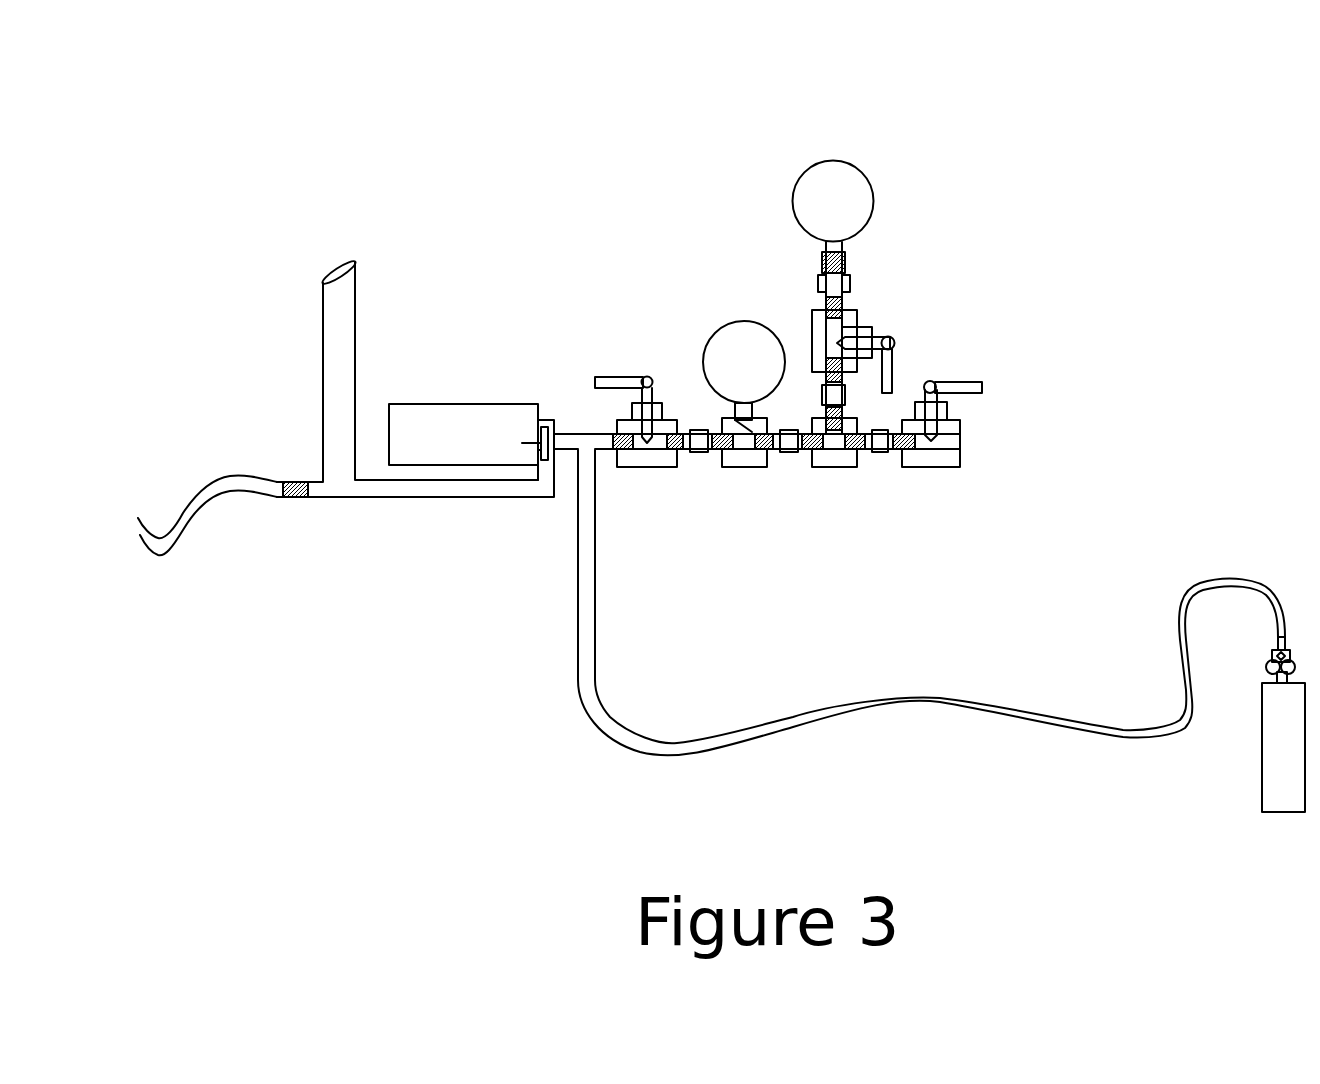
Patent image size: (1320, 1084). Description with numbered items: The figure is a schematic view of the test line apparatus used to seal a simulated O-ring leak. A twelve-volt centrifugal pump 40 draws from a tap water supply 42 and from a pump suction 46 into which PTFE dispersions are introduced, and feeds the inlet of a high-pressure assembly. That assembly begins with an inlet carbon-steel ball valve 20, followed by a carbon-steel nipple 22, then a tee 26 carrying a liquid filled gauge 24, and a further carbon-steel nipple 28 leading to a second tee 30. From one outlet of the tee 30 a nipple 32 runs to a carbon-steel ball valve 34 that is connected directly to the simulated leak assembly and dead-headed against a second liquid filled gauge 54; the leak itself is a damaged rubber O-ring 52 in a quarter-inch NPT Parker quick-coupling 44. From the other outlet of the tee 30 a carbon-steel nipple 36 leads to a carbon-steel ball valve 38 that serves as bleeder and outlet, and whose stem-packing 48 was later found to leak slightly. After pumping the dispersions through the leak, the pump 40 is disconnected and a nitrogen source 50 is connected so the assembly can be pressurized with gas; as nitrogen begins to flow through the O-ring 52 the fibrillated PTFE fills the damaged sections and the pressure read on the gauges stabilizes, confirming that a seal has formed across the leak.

The carbon-steel ball valve (inlet) 20 is at (643, 380).
The carbon-steel nipple 22 is at (703, 453).
The liquid filled gauge 24 is at (738, 330).
The tee 26 is at (755, 458).
The carbon-steel nipple 28 is at (792, 452).
The tee 30 is at (852, 455).
The nipple 32 is at (845, 412).
The carbon-steel ball-valve 34 is at (897, 343).
The carbon-steel nipple 36 is at (885, 453).
The carbon-steel ball-valve (bleeder and outlet) 38 is at (982, 383).
The centrifugal pump 40 is at (435, 420).
The tap water supply 42 is at (137, 519).
The quick-coupling 44 is at (850, 276).
The pump suction 46 is at (347, 313).
The stem-packing 48 is at (947, 407).
The nitrogen source 50 is at (1272, 790).
The rubber O-ring 52 is at (823, 275).
The liquid filled gauge 54 is at (838, 190).